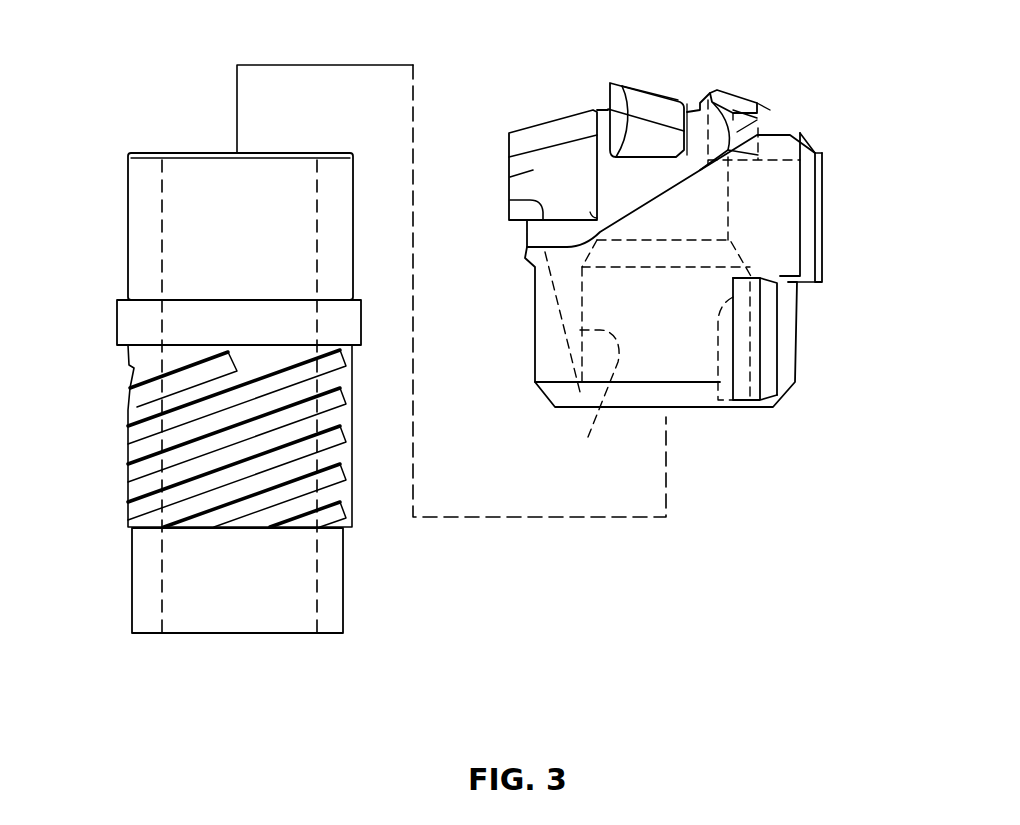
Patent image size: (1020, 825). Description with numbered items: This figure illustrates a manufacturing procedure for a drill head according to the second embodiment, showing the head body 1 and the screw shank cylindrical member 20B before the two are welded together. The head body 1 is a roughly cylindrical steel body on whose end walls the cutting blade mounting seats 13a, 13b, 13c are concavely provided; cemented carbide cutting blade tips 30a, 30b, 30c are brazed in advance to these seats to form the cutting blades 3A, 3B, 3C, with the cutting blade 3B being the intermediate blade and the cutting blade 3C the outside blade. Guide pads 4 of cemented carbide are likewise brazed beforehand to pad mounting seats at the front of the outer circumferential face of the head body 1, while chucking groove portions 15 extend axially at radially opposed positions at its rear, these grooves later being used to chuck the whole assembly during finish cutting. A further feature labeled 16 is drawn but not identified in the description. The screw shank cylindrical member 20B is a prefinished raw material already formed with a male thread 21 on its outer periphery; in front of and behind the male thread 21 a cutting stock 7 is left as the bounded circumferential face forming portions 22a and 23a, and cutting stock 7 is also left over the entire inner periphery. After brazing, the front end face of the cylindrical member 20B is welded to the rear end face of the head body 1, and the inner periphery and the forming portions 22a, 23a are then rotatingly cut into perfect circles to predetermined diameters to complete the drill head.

The head body 1 is at (520, 322).
The cutting blade 3A is at (647, 133).
The cutting blade 3B is at (735, 95).
The cutting blade 3C is at (542, 118).
The guide pad 4 is at (825, 212).
The cutting stock 7 is at (180, 320).
The cutting blade mounting seat 13a is at (621, 86).
The intermediate cutting blade mounting seat 13b is at (808, 148).
The outside cutting blade mounting seat 13c is at (510, 200).
The chucking groove portion 15 is at (745, 343).
The coolant passage 16 is at (598, 402).
The screw shank cylindrical member 20B is at (112, 284).
The male thread 21 is at (340, 418).
The bounded circumferential face forming portion 22a is at (288, 323).
The bounded circumferential face forming portion 23a is at (217, 600).
The cutting blade tip 30a is at (667, 93).
The cutting blade tip 30b is at (760, 108).
The cutting blade tip 30c is at (510, 177).